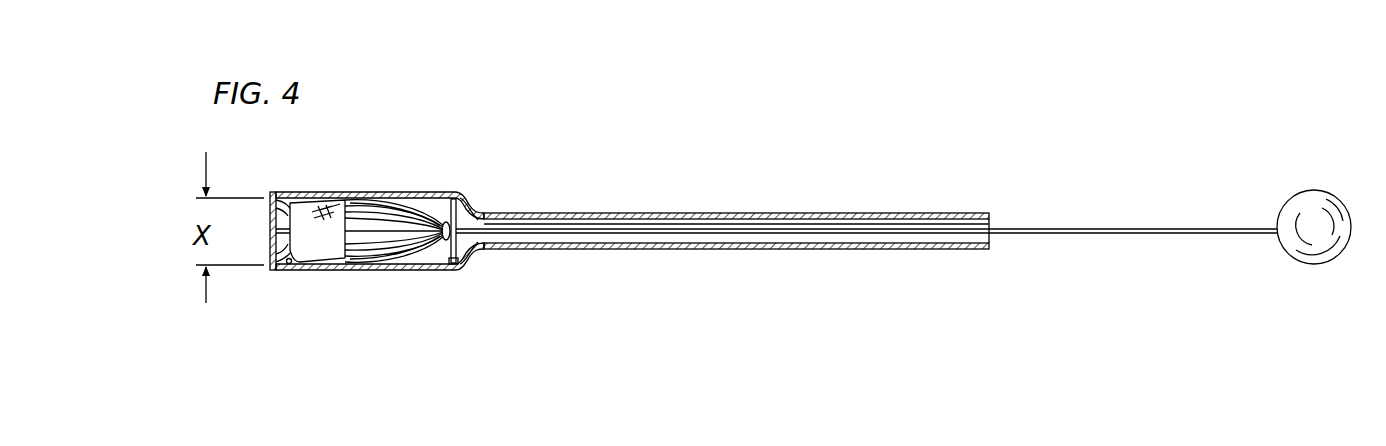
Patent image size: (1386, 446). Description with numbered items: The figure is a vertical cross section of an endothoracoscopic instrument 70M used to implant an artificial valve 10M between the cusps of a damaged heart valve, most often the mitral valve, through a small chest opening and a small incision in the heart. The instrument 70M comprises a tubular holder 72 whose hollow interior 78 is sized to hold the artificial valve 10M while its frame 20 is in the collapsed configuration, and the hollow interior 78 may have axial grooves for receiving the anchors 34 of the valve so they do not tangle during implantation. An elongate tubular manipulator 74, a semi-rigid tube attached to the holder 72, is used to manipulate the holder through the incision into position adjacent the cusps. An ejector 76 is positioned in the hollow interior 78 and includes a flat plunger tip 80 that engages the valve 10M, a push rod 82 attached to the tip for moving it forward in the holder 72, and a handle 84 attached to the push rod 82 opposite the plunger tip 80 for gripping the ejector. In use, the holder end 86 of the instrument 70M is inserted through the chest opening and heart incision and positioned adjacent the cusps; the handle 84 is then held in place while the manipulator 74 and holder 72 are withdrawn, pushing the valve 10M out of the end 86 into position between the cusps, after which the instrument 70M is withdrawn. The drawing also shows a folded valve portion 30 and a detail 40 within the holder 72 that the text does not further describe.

The endothoracoscopic instrument 70M is at (942, 170).
The artificial valve 10M is at (412, 191).
The anchors 34 is at (312, 148).
The folded intraocular lens 30 is at (435, 204).
The flat plunger tip 80 is at (477, 212).
The tubular holder 72 is at (452, 270).
The frame 20 is at (419, 268).
The plunger tip block 40 is at (306, 266).
The hollow interior 78 is at (290, 266).
The holder end 86 is at (270, 266).
The tubular manipulator 74 is at (738, 251).
The ejector 76 is at (1112, 236).
The push rod 82 is at (1040, 226).
The handle 84 is at (1318, 191).